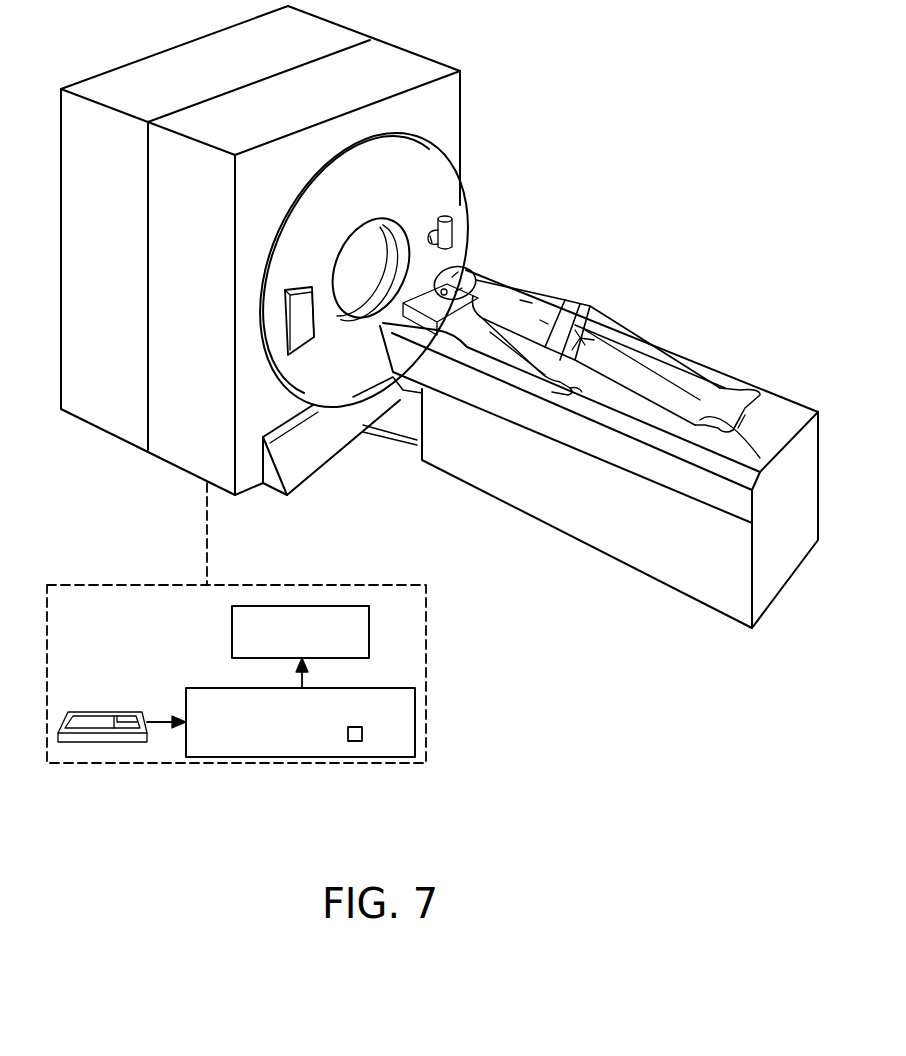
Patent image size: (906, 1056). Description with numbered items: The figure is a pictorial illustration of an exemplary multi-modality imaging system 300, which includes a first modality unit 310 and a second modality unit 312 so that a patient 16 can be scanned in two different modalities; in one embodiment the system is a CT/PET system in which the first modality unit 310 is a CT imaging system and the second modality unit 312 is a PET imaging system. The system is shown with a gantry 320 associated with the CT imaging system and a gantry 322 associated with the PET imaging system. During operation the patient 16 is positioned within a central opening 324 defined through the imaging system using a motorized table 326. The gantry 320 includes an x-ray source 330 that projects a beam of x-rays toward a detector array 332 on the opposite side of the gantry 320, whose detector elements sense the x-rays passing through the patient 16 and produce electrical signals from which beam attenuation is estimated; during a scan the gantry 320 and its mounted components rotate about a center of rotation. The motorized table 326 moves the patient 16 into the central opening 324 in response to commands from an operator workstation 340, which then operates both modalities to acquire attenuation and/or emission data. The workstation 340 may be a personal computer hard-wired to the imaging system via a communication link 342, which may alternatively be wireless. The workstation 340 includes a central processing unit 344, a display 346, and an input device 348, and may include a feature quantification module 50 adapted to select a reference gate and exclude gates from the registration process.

The patient 16 is at (538, 298).
The feature quantification module 50 is at (363, 733).
The multi-modality imaging system 300 is at (398, 448).
The first modality unit 310 is at (286, 255).
The second modality unit 312 is at (108, 423).
The gantry 320 is at (451, 101).
The gantry 322 is at (173, 58).
The central opening 324 is at (363, 260).
The motorized table 326 is at (565, 522).
The x-ray source 330 is at (455, 232).
The detector array 332 is at (305, 343).
The operator workstation 340 is at (260, 623).
The communication link 342 is at (207, 543).
The central processing unit 344 is at (186, 705).
The display 346 is at (232, 628).
The input device 348 is at (113, 712).